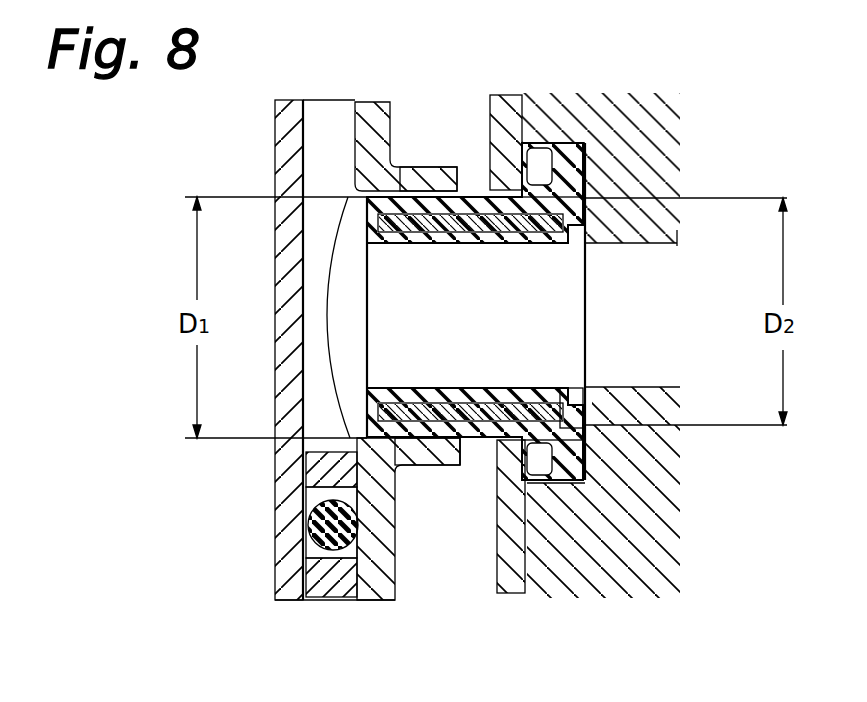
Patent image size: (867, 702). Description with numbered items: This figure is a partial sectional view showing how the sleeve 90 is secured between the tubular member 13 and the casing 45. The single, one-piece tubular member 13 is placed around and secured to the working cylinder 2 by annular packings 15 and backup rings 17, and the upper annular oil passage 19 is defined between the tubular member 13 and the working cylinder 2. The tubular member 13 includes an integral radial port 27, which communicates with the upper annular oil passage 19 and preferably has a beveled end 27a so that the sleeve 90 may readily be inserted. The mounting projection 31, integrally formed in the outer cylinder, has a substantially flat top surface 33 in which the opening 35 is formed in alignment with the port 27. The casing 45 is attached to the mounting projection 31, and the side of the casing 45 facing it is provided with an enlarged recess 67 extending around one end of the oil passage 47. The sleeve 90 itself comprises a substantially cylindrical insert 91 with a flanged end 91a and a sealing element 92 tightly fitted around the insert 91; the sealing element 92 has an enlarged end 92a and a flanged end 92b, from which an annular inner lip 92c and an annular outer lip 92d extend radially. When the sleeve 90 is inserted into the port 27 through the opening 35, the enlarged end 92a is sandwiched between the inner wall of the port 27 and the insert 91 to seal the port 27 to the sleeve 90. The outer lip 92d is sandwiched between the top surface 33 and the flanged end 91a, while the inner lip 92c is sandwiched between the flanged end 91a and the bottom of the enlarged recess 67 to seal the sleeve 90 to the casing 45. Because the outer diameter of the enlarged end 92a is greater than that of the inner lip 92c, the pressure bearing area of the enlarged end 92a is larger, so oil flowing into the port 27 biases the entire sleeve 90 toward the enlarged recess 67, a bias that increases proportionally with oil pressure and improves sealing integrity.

The working cylinder 2 is at (275, 118).
The tubular member 13 is at (381, 585).
The annular packings 15 is at (315, 537).
The backup rings 17 is at (317, 468).
The upper annular oil passage 19 is at (304, 162).
The port 27 is at (428, 168).
The beveled end 27a is at (458, 190).
The mounting projection 31 is at (513, 582).
The flat top surface 33 is at (500, 97).
The opening 35 is at (478, 437).
The casing 45 is at (613, 113).
The oil passage 47 is at (678, 392).
The enlarged recess 67 is at (628, 152).
The sleeve 90 is at (592, 470).
The insert 91 is at (376, 193).
The flanged end 91a is at (583, 192).
The sealing element 92 is at (478, 195).
The enlarged end 92a is at (417, 467).
The flanged end 92b is at (577, 485).
The inner lip 92c is at (600, 450).
The outer lip 92d is at (490, 470).